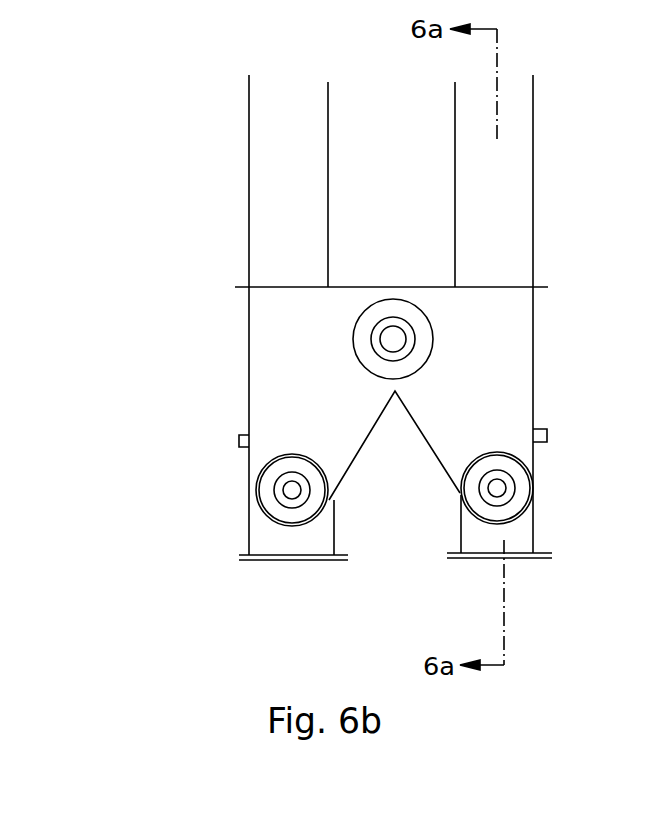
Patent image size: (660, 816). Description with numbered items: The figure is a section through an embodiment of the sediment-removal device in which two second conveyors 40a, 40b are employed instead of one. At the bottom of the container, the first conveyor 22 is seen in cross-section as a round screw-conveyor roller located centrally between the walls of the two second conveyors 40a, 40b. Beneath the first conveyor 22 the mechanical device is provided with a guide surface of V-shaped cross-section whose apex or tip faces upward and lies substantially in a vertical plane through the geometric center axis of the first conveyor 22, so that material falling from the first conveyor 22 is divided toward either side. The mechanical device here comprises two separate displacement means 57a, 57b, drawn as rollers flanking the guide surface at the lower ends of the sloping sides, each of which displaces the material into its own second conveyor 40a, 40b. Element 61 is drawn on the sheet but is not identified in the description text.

The second conveyor 40a is at (262, 212).
The second conveyor 40b is at (524, 181).
The first conveyor 22 is at (381, 311).
The displacement means 57a is at (266, 497).
The displacement means 57b is at (537, 503).
The belt 61 is at (430, 448).